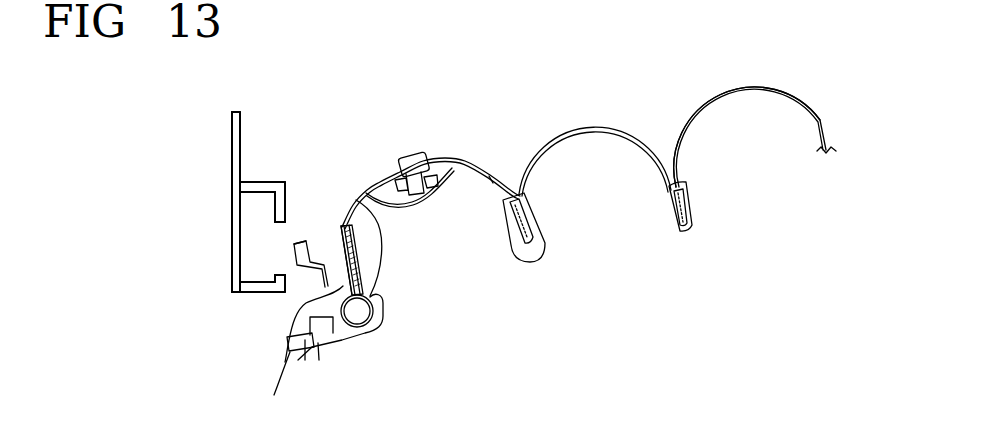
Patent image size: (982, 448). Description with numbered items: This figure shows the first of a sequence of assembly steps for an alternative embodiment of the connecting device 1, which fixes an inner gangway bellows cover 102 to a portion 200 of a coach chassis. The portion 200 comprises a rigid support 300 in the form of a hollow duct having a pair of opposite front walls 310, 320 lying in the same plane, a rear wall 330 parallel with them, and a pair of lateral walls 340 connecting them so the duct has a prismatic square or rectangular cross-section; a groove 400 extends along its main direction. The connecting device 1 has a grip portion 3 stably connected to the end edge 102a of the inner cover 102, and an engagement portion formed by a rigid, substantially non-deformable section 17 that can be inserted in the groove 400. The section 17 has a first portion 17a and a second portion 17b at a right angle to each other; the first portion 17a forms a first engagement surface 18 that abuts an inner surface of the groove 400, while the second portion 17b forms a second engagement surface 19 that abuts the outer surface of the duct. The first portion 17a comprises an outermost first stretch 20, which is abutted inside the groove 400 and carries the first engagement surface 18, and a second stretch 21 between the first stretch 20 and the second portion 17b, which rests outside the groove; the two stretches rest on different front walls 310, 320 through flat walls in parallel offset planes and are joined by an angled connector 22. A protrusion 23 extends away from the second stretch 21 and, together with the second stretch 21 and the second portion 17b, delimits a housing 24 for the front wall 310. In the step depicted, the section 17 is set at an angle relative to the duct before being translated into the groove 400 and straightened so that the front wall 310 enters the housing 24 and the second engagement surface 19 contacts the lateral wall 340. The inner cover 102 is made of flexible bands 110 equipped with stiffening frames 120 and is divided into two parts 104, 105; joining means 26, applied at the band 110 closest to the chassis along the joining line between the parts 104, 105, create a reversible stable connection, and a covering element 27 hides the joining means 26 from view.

The connecting device 1 is at (394, 331).
The grip portion 3 is at (367, 280).
The section 17 is at (357, 338).
The first portion 17a is at (368, 273).
The second portion 17b is at (335, 338).
The first engagement surface 18 is at (300, 243).
The second engagement surface 19 is at (290, 352).
The first stretch 20 is at (296, 250).
The second stretch 21 is at (305, 345).
The angled connector 22 is at (343, 255).
The protrusion 23 is at (287, 347).
The housing 24 is at (318, 343).
The joining means 26 is at (421, 152).
The covering element 27 is at (444, 200).
The inner gangway bellows cover 102 is at (745, 85).
The end edge 102a is at (362, 192).
The first part of inner gangway bellows cover 104 is at (394, 158).
The second part of inner gangway bellows cover 105 is at (491, 182).
The band 110 is at (489, 173).
The stiffening frame 120 is at (536, 262).
The portion of the chassis 200 is at (243, 100).
The rigid support 300 is at (228, 173).
The front wall 310 is at (292, 197).
The front wall 320 is at (278, 298).
The rear wall 330 is at (240, 232).
The lateral wall 340 is at (266, 188).
The groove 400 is at (238, 271).